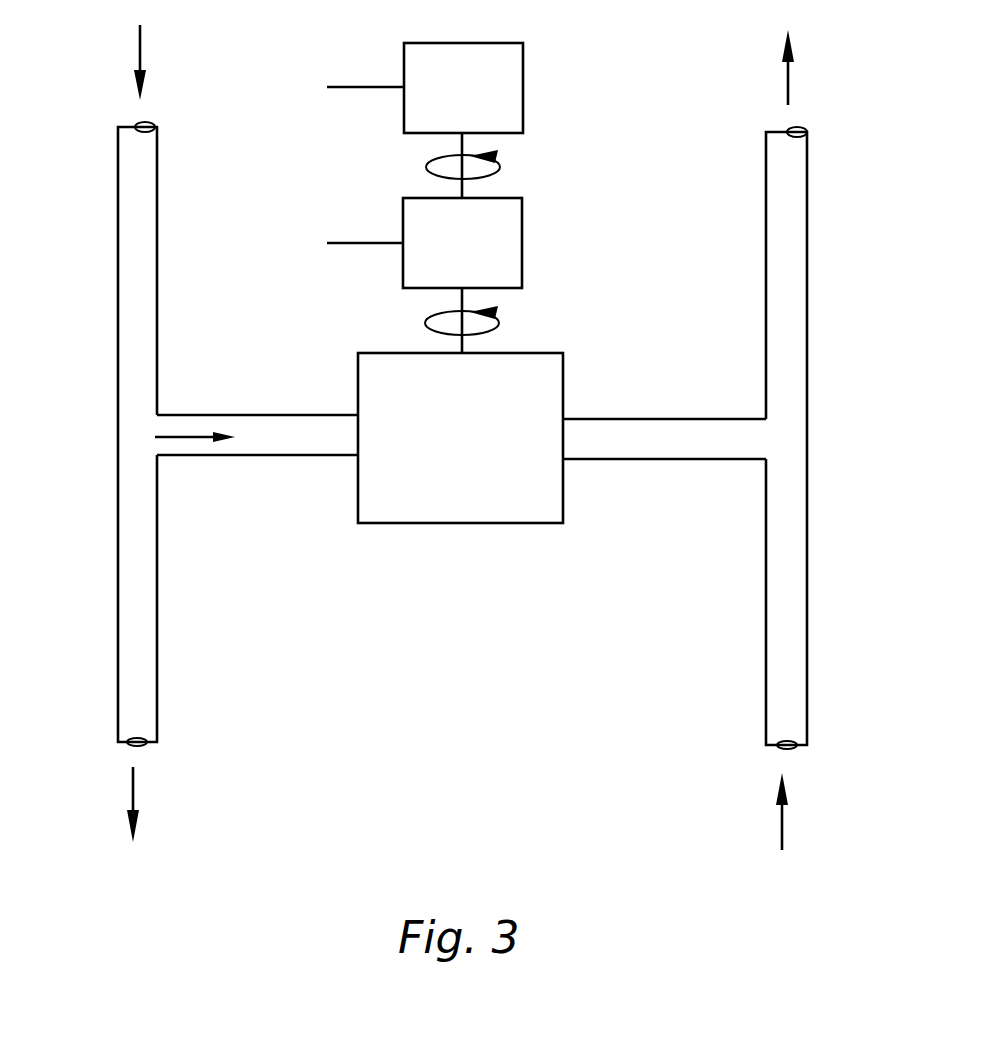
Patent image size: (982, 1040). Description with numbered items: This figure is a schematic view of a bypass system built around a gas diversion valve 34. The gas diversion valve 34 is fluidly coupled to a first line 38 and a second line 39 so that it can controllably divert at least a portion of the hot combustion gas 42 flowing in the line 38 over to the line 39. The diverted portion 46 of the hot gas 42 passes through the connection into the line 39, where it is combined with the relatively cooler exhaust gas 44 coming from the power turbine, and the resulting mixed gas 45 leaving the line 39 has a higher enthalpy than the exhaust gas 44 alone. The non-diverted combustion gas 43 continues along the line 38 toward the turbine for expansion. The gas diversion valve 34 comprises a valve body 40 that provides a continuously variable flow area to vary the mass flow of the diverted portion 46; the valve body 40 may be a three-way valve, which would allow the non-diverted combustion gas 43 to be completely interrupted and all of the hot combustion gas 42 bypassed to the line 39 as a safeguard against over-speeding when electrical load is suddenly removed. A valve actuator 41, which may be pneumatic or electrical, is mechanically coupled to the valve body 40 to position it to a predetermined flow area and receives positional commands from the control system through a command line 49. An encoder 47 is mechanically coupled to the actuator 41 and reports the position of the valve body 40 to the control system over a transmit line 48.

The gas diversion valve 34 is at (578, 145).
The line 38 is at (117, 355).
The line 39 is at (807, 357).
The valve body 40 is at (474, 451).
The valve actuator 41 is at (478, 258).
The hot combustion gas 42 is at (140, 46).
The non-diverted combustion gas 43 is at (133, 790).
The exhaust gas 44 is at (782, 823).
The mixed gas 45 is at (788, 80).
The diverted portion 46 is at (182, 433).
The encoder 47 is at (478, 101).
The transmit line 48 is at (358, 87).
The command line 49 is at (358, 243).